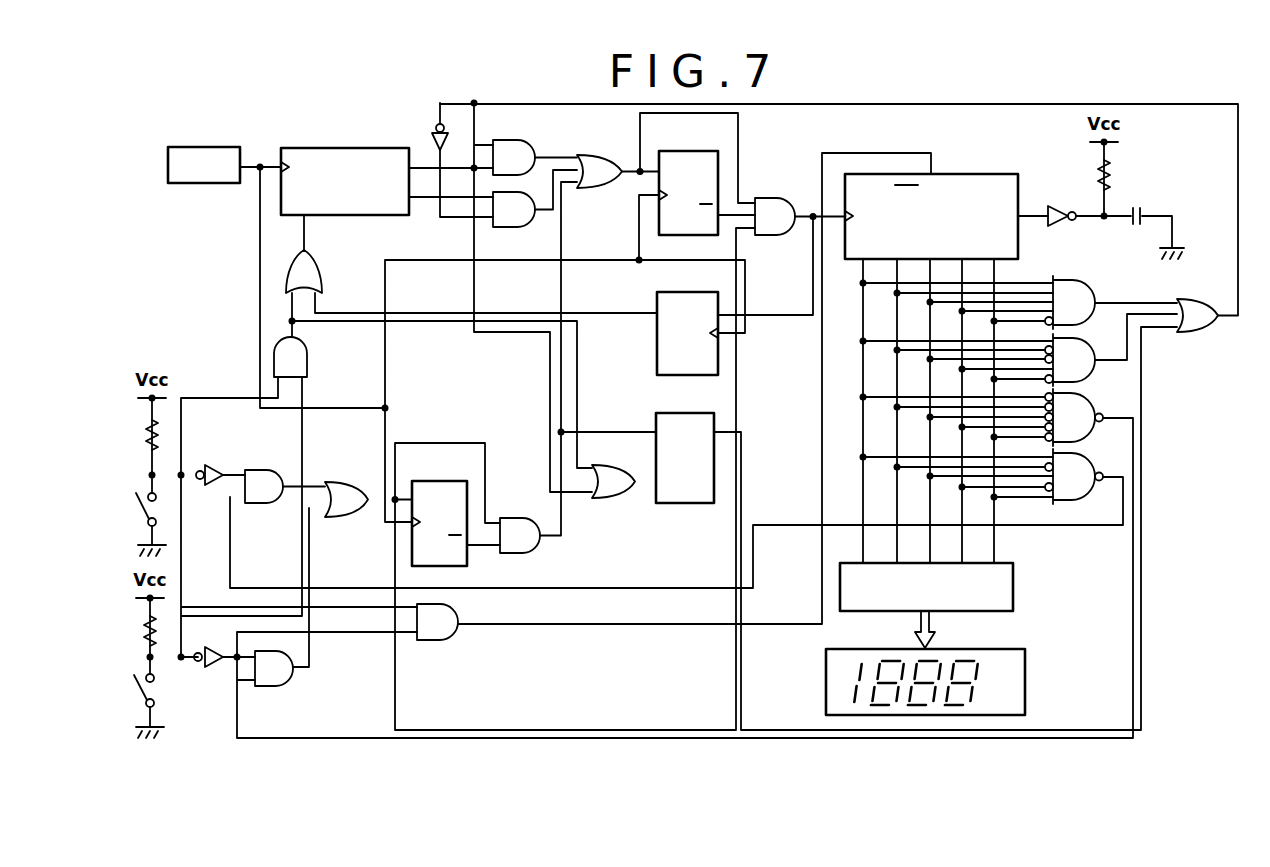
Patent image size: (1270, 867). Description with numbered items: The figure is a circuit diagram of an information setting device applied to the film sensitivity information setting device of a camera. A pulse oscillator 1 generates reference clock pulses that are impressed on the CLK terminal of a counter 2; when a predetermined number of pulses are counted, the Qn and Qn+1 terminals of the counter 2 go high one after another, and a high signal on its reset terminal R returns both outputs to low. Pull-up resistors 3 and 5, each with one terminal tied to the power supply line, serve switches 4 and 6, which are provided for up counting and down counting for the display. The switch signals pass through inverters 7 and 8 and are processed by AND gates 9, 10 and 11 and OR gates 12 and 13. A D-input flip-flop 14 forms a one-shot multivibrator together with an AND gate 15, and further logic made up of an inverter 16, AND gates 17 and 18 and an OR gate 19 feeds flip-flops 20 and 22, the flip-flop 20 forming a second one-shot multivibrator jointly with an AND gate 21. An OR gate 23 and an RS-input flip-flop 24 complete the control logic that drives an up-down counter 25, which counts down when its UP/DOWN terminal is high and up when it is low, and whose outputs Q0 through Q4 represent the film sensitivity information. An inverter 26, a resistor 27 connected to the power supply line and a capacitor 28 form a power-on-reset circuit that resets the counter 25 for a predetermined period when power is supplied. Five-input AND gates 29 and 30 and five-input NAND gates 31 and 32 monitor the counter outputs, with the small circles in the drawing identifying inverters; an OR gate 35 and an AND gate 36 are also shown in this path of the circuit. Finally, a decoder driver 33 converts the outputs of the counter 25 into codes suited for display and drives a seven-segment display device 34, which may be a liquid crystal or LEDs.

The pulse oscillator 1 is at (215, 147).
The counter 2 is at (375, 148).
The pull-up resistor 3 is at (160, 430).
The switch 4 is at (158, 510).
The pull-up resistor 5 is at (158, 628).
The switch 6 is at (156, 690).
The inverter 7 is at (212, 463).
The inverter 8 is at (210, 670).
The AND gate 9 is at (266, 470).
The AND gate 10 is at (278, 686).
The AND gate 11 is at (307, 360).
The OR gate 12 is at (322, 272).
The OR gate 13 is at (345, 482).
The D-input flip-flop 14 is at (440, 481).
The AND gate 15 is at (515, 518).
The inverter 16 is at (434, 132).
The AND gate 17 is at (515, 140).
The AND gate 18 is at (515, 227).
The OR gate 19 is at (600, 155).
The D-input flip-flop 20 is at (700, 151).
The AND gate 21 is at (772, 198).
The D-input flip-flop 22 is at (698, 292).
The OR gate 23 is at (606, 498).
The RS-input flip-flop 24 is at (688, 413).
The up-down counter 25 is at (1000, 174).
The inverter 26 is at (1054, 206).
The resistor 27 is at (1112, 176).
The capacitor 28 is at (1136, 228).
The 5-input AND gate 29 is at (1068, 280).
The 5-input AND gate 30 is at (1075, 338).
The 5-input NAND gate 31 is at (1078, 393).
The 5-input NAND gate 32 is at (1075, 453).
The decoder driver 33 is at (1013, 577).
The 7-segment display device 34 is at (1000, 649).
The OR gate 35 is at (1198, 299).
The AND gate 36 is at (440, 604).